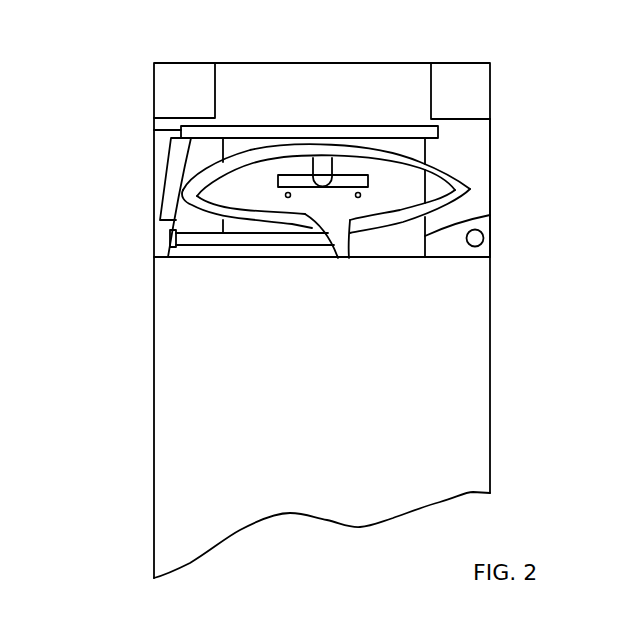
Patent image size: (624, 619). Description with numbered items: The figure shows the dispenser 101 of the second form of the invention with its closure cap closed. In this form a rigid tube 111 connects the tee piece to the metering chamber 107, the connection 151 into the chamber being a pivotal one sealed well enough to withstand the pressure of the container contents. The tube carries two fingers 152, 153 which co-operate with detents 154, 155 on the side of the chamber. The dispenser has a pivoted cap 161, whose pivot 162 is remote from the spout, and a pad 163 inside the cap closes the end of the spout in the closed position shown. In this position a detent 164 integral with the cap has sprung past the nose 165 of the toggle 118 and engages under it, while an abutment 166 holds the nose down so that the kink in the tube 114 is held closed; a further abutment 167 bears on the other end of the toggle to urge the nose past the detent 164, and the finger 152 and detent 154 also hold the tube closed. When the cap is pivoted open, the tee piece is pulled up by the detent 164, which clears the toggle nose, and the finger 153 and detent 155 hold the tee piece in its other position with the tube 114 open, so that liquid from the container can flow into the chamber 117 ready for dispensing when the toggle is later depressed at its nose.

The dispenser 101 is at (112, 353).
The metering chamber 107 is at (490, 217).
The tube 111 is at (325, 160).
The tube 114 is at (192, 193).
The chamber 117 is at (191, 248).
The toggle 118 is at (308, 130).
The connection 151 is at (317, 188).
The finger 152 is at (287, 175).
The finger 153 is at (361, 175).
The detent 154 is at (286, 198).
The detent 155 is at (360, 198).
The pivoted cap 161 is at (492, 142).
The pivot 162 is at (483, 243).
The pad 163 is at (170, 242).
The detent 164 is at (170, 158).
The nose 165 is at (153, 130).
The abutment 166 is at (162, 92).
The abutment 167 is at (481, 82).